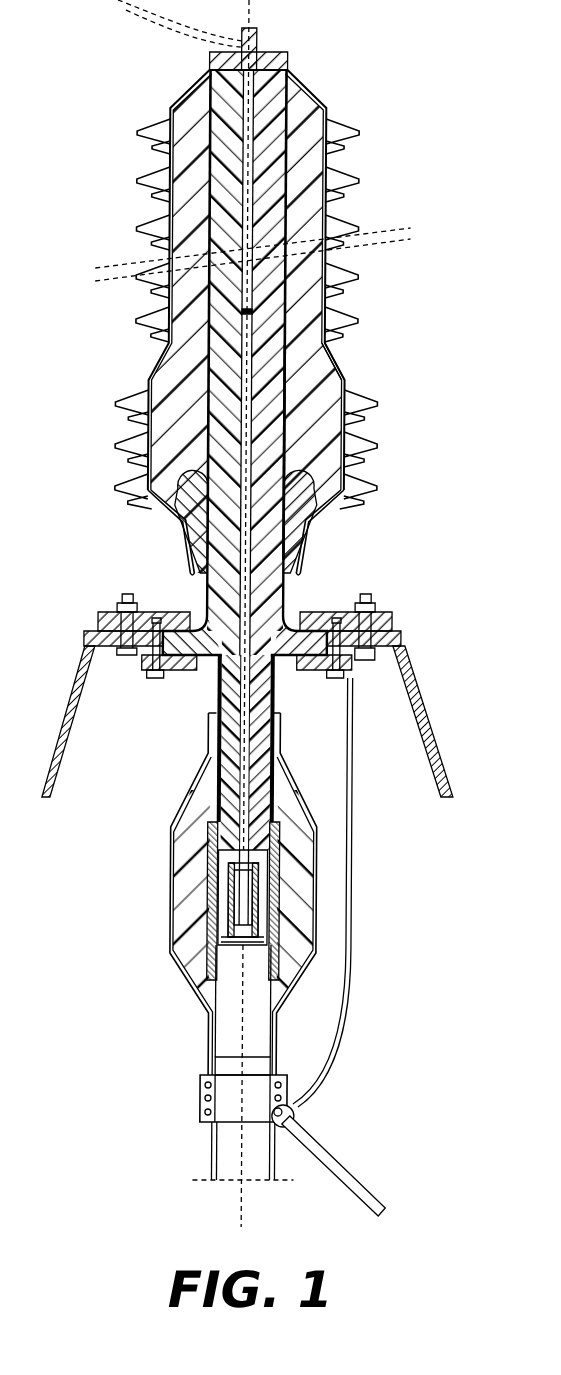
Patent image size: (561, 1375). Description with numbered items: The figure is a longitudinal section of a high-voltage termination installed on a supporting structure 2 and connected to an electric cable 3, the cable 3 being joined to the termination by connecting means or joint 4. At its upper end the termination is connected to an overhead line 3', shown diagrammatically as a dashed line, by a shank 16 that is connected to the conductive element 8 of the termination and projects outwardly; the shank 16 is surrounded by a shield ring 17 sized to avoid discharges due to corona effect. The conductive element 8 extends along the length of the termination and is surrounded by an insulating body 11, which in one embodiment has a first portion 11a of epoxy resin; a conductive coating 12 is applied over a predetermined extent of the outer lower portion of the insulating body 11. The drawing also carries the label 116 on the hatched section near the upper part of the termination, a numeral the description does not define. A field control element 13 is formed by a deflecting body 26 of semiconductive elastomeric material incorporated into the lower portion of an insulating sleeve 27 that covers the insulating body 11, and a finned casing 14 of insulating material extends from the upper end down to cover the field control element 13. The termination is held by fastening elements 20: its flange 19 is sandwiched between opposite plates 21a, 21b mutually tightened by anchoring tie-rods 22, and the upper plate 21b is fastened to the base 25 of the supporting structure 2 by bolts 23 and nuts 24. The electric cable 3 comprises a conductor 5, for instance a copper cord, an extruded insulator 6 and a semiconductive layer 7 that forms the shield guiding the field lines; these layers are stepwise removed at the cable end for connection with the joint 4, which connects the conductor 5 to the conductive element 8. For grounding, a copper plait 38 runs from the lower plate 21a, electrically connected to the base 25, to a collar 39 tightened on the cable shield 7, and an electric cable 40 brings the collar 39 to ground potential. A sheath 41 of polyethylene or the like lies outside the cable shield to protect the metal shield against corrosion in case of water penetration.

The supporting structure 2 is at (459, 762).
The electric cable 3 is at (223, 1151).
The overhead line 3' is at (198, 23).
The joint 4 is at (156, 908).
The conductor 5 is at (238, 938).
The extruded insulator 6 is at (240, 1022).
The semiconductive layer 7 is at (262, 1067).
The conductive element 8 is at (250, 763).
The insulating body 11 is at (222, 378).
The first portion of insulating body 11a is at (275, 453).
The conductive coating 12 is at (295, 590).
The field control element 13 is at (178, 532).
The finned casing 14 is at (135, 220).
The shank 16 is at (257, 40).
The shield ring 17 is at (210, 63).
The flange 19 is at (173, 670).
The fastening elements 20 is at (398, 571).
The lower plate 21a is at (350, 707).
The upper plate 21b is at (396, 616).
The anchoring tie-rods 22 is at (157, 678).
The bolts 23 is at (88, 650).
The nuts 24 is at (120, 600).
The base 25 is at (405, 637).
The deflecting body 26 is at (183, 510).
The insulating sleeve 27 is at (338, 385).
The copper plait 38 is at (358, 918).
The collar 39 is at (234, 1100).
The electric cable 40 is at (352, 1167).
The sheath 41 is at (285, 1153).
The central conductor 116 is at (273, 172).